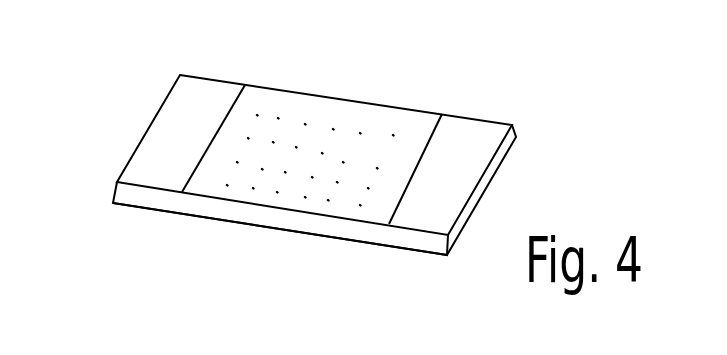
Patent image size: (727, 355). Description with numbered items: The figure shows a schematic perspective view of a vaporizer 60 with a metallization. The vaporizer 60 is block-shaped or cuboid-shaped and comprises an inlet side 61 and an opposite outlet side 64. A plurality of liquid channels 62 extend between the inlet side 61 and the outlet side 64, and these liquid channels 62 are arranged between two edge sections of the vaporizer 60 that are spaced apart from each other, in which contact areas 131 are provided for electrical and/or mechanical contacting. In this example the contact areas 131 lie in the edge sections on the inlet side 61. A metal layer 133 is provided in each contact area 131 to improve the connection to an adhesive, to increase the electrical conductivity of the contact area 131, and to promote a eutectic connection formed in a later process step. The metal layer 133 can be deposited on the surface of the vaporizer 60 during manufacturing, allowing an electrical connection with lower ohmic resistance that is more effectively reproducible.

The vaporizer 60 is at (124, 248).
The inlet side 61 is at (420, 128).
The liquid channels 62 is at (337, 123).
The outlet side 64 is at (302, 236).
The contact areas 131 is at (473, 135).
The metal layer 133 is at (204, 103).